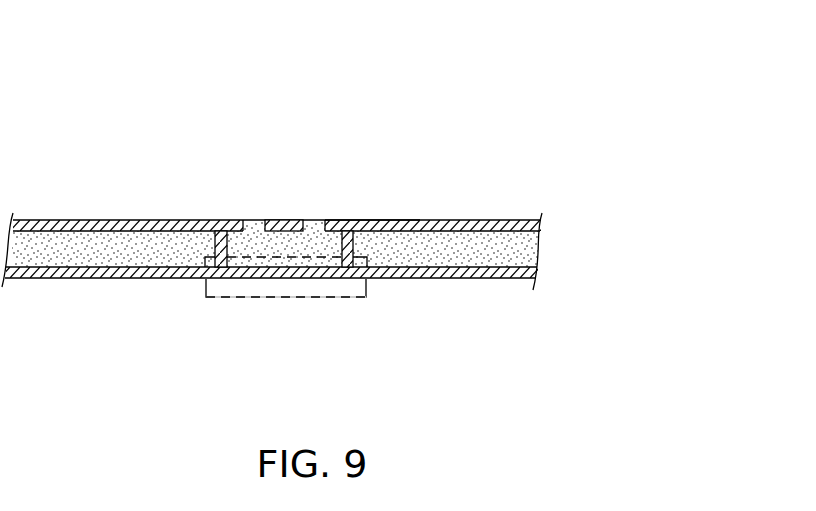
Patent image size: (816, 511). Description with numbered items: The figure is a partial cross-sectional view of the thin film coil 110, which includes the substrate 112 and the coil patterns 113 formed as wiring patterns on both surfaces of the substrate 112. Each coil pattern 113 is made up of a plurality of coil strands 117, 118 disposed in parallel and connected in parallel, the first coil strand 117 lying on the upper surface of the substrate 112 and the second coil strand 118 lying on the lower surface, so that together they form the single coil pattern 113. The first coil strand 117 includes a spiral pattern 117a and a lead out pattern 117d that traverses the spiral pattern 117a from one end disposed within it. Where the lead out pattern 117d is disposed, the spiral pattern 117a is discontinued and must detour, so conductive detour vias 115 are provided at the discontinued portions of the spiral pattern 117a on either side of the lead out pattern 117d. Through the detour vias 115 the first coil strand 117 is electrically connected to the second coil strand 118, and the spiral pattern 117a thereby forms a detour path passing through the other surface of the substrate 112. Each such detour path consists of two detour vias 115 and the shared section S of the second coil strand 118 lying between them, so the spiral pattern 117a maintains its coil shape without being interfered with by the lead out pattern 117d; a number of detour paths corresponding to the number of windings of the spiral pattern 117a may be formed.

The thin film coil 110 is at (309, 191).
The substrate 112 is at (482, 250).
The coil pattern 113 is at (277, 123).
The detour via 115 is at (215, 243).
The first coil strand 117 is at (341, 147).
The spiral pattern 117a is at (380, 168).
The lead out pattern 117d is at (283, 222).
The second coil strand 118 is at (150, 274).
The shared section S is at (283, 297).